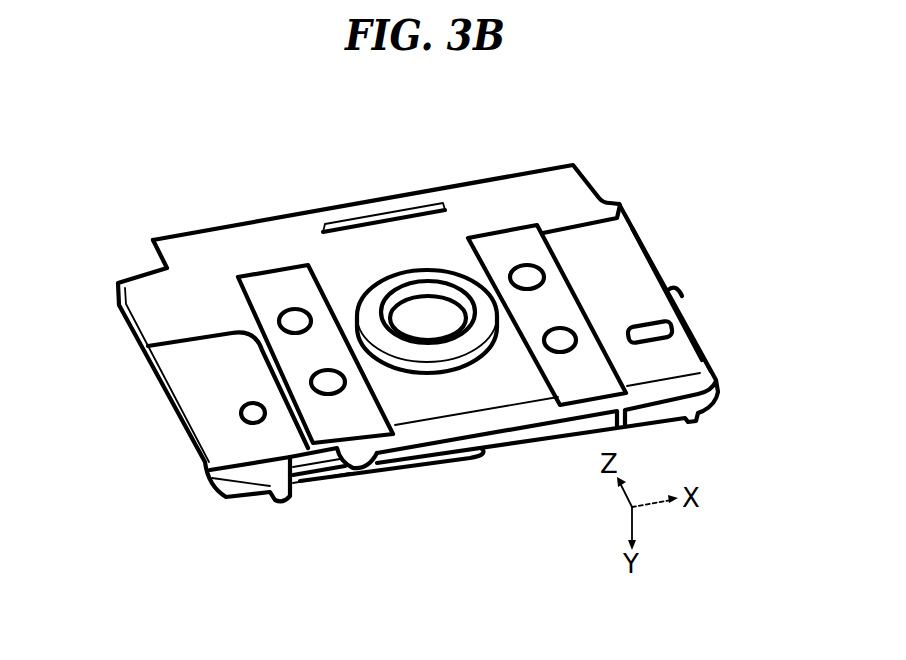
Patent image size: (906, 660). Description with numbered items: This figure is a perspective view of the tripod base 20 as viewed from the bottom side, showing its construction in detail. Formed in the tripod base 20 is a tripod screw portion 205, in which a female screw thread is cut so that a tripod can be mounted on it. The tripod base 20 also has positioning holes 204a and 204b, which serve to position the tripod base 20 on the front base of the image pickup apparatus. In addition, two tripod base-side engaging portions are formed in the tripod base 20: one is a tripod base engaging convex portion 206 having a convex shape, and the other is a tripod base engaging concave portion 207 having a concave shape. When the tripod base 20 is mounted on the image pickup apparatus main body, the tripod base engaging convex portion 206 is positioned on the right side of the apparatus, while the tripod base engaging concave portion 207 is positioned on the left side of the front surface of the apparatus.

The tripod base 20 is at (625, 170).
The tripod screw portion 205 is at (422, 310).
The tripod base engaging convex portion 206 is at (667, 252).
The positioning hole 204b is at (655, 340).
The positioning hole 204a is at (240, 410).
The tripod base engaging concave portion 207 is at (315, 473).